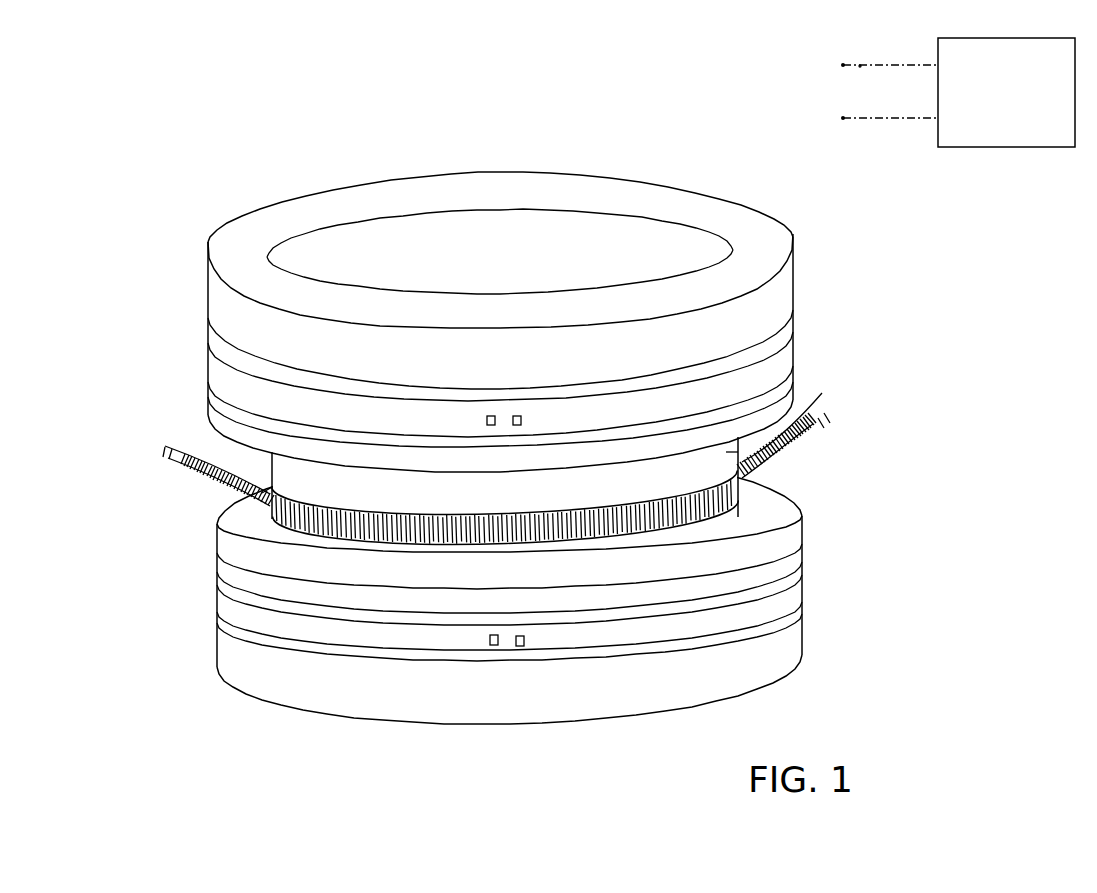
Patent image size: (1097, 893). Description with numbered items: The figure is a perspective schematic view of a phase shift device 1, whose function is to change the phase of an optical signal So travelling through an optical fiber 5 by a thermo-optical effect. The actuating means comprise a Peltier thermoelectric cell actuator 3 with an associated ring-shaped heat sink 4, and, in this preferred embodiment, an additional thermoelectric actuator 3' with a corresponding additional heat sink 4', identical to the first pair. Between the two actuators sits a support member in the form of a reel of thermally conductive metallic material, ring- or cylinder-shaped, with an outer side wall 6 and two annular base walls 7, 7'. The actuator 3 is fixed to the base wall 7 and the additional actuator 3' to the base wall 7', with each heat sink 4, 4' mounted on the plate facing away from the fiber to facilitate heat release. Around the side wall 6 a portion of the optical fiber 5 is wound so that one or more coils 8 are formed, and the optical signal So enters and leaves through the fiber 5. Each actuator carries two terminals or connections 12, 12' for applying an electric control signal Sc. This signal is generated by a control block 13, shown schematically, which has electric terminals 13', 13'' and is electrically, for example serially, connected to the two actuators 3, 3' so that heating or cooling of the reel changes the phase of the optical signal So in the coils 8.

The phase shift device 1 is at (226, 163).
The Peltier thermoelectric cell actuator 3 is at (466, 326).
The additional thermoelectric actuator 3' is at (456, 591).
The heat sink 4 is at (475, 286).
The additional heat sink 4' is at (508, 681).
The optical fiber 5 is at (797, 447).
The outer side wall 6 is at (787, 423).
The annular base wall 7 is at (540, 384).
The annular base wall 7' is at (546, 537).
The coils 8 is at (262, 493).
The terminals or connections 12 is at (520, 381).
The connections 12' is at (534, 602).
The control block 13 is at (1006, 131).
The electric terminal 13' is at (880, 42).
The electric terminal 13'' is at (884, 153).
The optical signal So is at (152, 441).
The electric control signal Sc is at (860, 68).